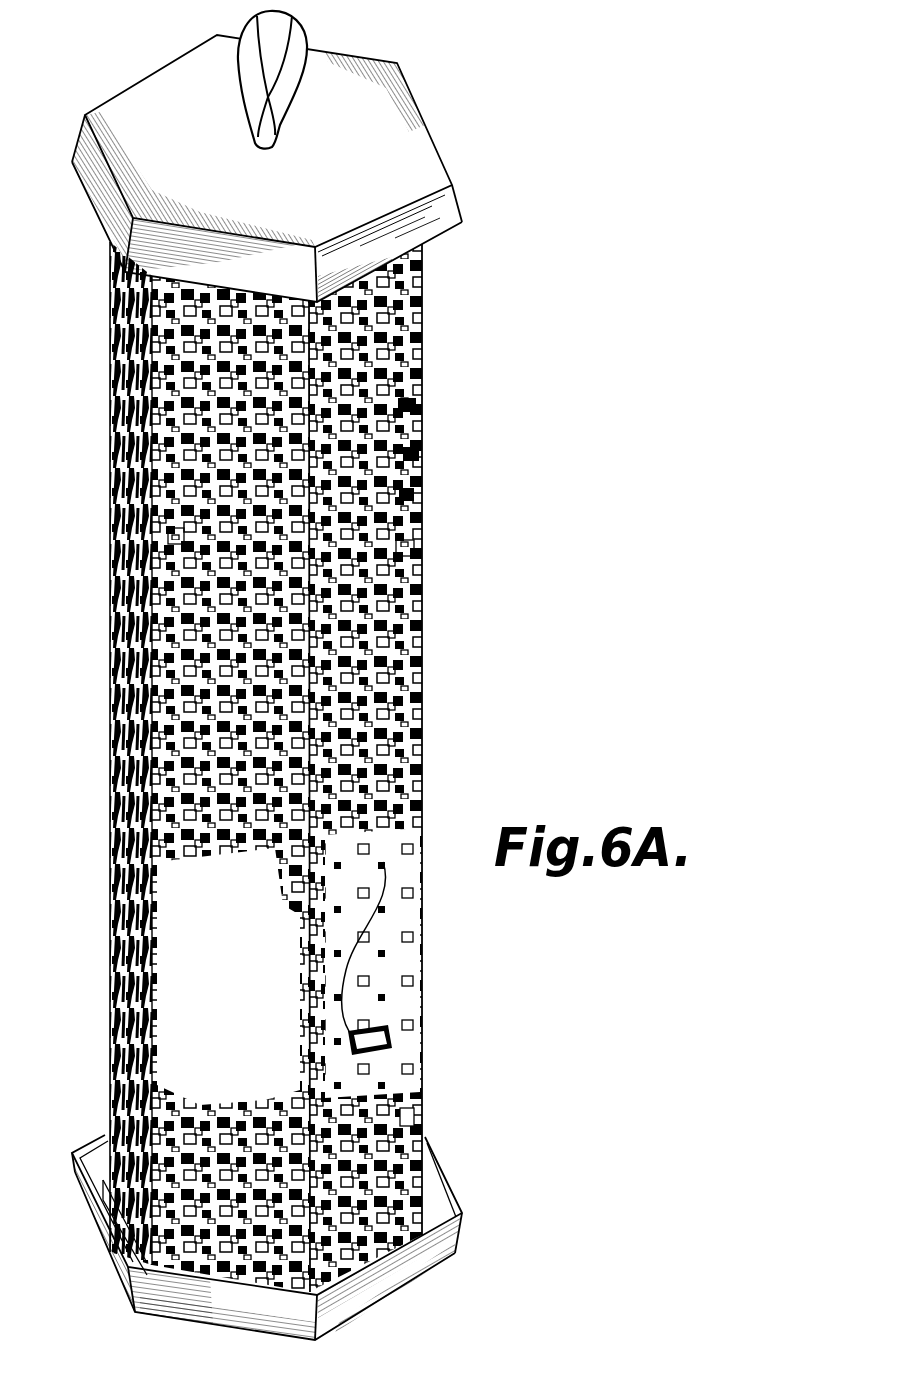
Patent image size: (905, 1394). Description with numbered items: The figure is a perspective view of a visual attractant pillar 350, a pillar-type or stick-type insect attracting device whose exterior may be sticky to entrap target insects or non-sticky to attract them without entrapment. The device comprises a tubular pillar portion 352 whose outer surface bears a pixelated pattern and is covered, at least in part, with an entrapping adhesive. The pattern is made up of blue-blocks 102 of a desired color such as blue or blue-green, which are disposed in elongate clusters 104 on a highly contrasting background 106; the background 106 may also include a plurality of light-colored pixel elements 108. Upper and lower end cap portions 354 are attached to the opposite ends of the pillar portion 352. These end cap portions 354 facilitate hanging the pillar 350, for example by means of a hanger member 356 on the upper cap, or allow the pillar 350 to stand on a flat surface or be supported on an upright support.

The visual attractant pillar 350 is at (556, 197).
The pillar portion 352 is at (430, 603).
The end cap portions 354 is at (447, 144).
The hanger member 356 is at (305, 35).
The blue-blocks 102 is at (421, 410).
The elongate clusters 104 is at (420, 548).
The background 106 is at (413, 1062).
The light-colored pixel elements 108 is at (415, 1120).